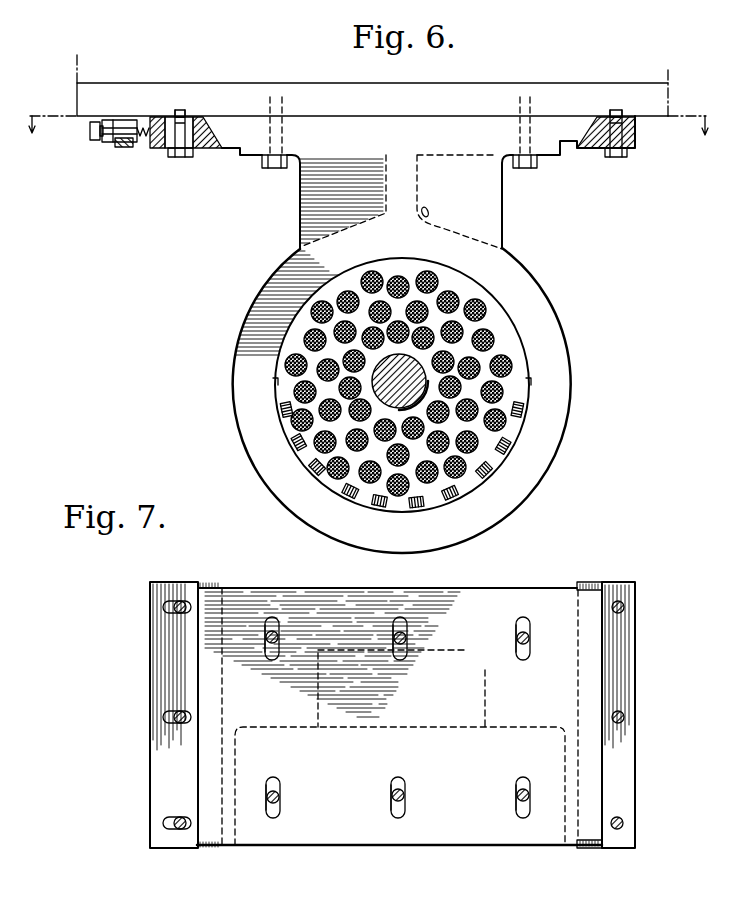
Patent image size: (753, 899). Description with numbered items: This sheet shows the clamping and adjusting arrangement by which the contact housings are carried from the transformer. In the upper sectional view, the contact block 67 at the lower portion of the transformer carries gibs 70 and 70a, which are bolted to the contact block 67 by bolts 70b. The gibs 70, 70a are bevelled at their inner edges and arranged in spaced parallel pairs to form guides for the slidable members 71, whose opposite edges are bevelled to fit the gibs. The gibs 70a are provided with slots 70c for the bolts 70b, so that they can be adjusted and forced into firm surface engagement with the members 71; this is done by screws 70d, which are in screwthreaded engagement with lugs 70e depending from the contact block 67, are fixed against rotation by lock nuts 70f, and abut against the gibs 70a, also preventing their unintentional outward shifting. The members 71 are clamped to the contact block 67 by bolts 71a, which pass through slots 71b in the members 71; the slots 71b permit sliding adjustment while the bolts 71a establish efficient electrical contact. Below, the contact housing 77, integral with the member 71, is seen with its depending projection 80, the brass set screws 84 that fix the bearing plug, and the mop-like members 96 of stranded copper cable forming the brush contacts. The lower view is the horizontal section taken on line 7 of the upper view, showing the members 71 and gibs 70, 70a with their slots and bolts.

In FIG. 6, the section line 7— 7 is at (368, 138).
In FIG. 6, the contact blocks 67 is at (656, 98).
In FIG. 6, the gibs 70 is at (637, 147).
In FIG. 7, the gibs 70 is at (622, 760).
In FIG. 6, the gibs 70a is at (222, 150).
In FIG. 7, the gibs 70a is at (160, 667).
In FIG. 6, the bolts 70b is at (180, 158).
In FIG. 7, the bolts 70b is at (177, 602).
In FIG. 6, the slots 70c is at (160, 150).
In FIG. 7, the slots 70c is at (162, 607).
In FIG. 6, the screws 70d is at (93, 141).
In FIG. 6, the lugs 70e is at (123, 142).
In FIG. 6, the lock nuts 70f is at (112, 120).
In FIG. 6, the slidable members 71 is at (545, 125).
In FIG. 7, the slidable members 71 is at (477, 832).
In FIG. 6, the bolts 71a is at (283, 169).
In FIG. 7, the bolts 71a is at (268, 775).
In FIG. 7, the slots 71b is at (270, 619).
In FIG. 6, the contact housings 77 is at (555, 378).
In FIG. 6, the depending projections 80 is at (490, 298).
In FIG. 6, the set screws 84 is at (372, 370).
In FIG. 6, the mop-like members 96 is at (503, 353).